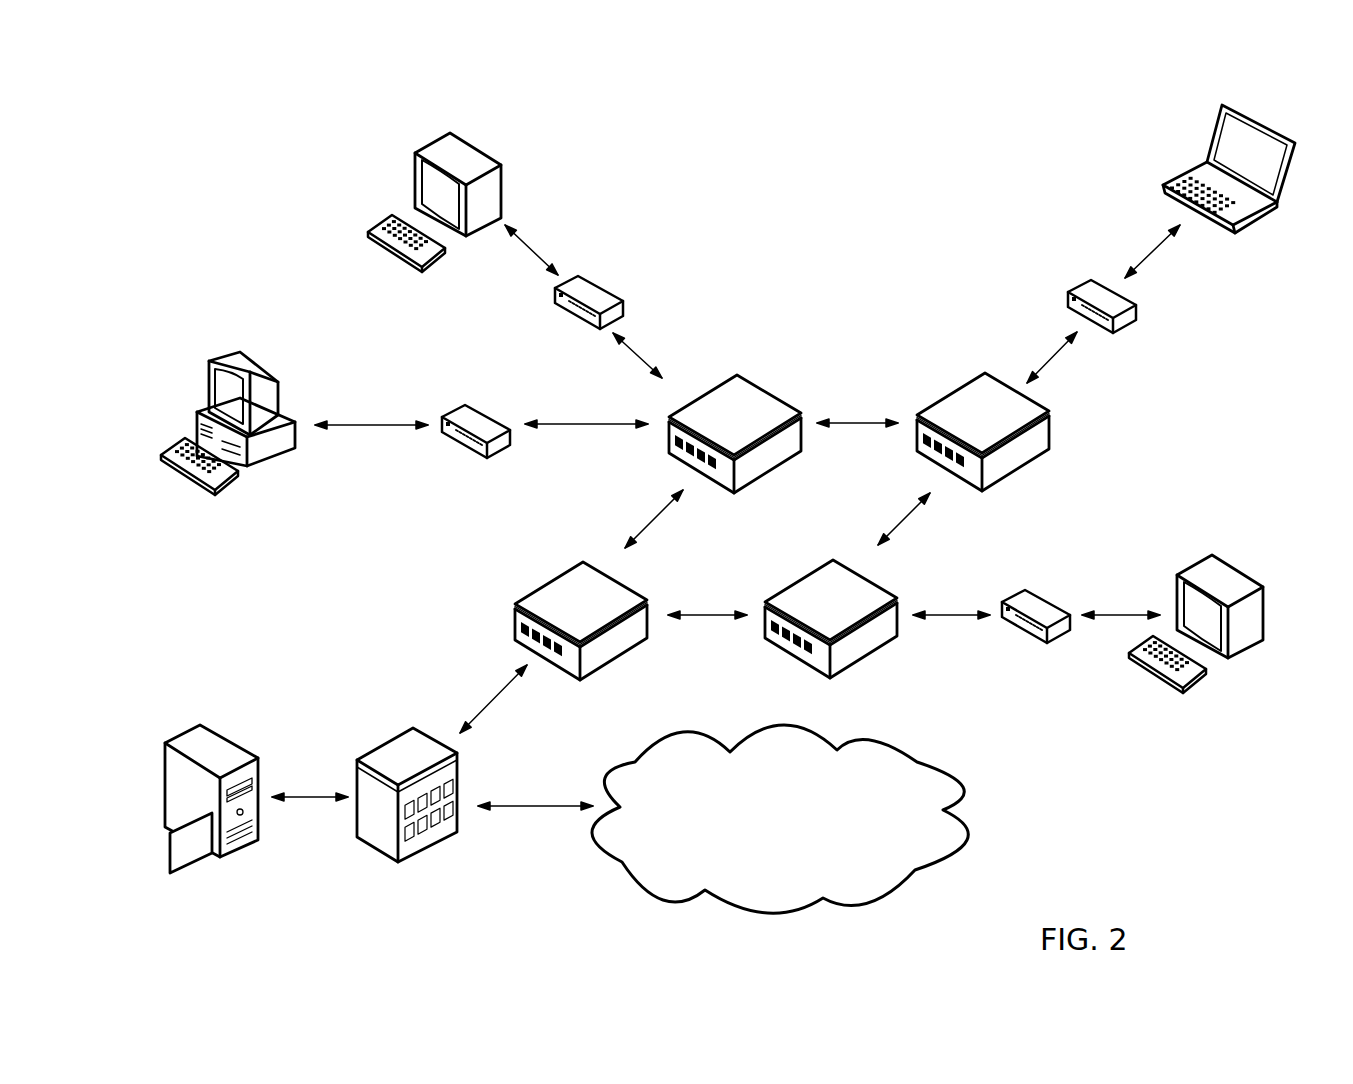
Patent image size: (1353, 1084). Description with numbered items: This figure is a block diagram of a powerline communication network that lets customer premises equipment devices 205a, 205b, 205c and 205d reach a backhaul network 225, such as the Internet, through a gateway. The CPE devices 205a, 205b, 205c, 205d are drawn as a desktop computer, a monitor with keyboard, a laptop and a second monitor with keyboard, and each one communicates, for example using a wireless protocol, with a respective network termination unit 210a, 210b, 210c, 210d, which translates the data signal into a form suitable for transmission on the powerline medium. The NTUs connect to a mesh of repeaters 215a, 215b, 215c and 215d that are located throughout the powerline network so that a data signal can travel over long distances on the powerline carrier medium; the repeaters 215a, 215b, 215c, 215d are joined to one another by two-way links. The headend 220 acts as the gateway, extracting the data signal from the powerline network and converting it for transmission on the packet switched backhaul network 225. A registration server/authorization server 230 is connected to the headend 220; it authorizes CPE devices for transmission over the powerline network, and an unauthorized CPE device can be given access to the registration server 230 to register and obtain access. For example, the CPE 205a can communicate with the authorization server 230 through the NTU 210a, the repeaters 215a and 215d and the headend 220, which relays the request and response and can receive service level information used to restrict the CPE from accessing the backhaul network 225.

The customer premises equipment (CPE) device 205a is at (262, 365).
The customer premises equipment (CPE) device 205b is at (495, 160).
The customer premises equipment (CPE) device 205c is at (1192, 163).
The customer premises equipment (CPE) device 205d is at (1225, 563).
The network termination unit (NTU) 210a is at (480, 405).
The network termination unit (NTU) 210b is at (598, 286).
The network termination unit (NTU) 210c is at (1130, 326).
The network termination unit (NTU) 210d is at (1040, 596).
The repeater 215a is at (760, 389).
The repeater 215b is at (958, 387).
The repeater 215c is at (878, 581).
The repeater 215d is at (628, 583).
The headend 220 is at (396, 736).
The backhaul network 225 is at (927, 759).
The registration server / authorization server 230 is at (219, 729).